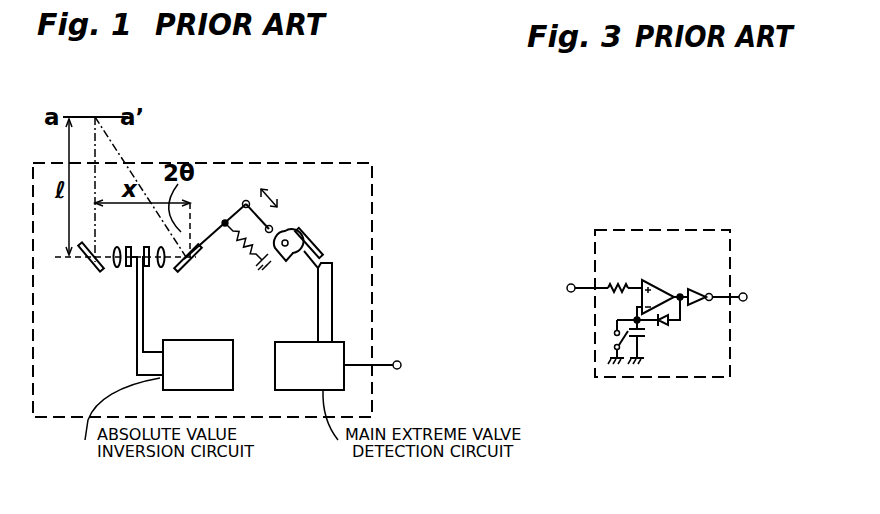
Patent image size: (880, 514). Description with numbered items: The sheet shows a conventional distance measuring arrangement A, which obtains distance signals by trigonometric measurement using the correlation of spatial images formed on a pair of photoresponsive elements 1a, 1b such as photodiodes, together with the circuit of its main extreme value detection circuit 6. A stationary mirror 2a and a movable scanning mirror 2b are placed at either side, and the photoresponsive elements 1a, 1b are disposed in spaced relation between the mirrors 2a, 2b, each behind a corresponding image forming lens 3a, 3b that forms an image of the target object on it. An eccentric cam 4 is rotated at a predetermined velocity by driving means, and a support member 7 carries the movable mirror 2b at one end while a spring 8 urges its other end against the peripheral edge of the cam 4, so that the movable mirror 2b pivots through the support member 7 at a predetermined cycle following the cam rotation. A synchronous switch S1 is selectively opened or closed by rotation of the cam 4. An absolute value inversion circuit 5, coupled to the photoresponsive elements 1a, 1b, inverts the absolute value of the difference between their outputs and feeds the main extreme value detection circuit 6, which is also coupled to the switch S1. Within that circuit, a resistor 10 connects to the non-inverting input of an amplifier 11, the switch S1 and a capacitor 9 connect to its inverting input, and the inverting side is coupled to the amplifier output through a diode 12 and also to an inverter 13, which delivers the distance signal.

In FIG. 1, the distance measuring arrangement A is at (234, 162).
In FIG. 1, the photoresponsive element 1a is at (116, 247).
In FIG. 1, the photoresponsive element 1b is at (159, 247).
In FIG. 1, the stationary mirror 2a is at (87, 263).
In FIG. 1, the movable mirror 2b is at (193, 266).
In FIG. 1, the image forming lens 3a is at (121, 270).
In FIG. 1, the image forming lens 3b is at (148, 268).
In FIG. 1, the eccentric cam 4 is at (283, 231).
In FIG. 1, the absolute value inversion circuit 5 is at (211, 379).
In FIG. 1, the main extreme value detection circuit 6 is at (323, 381).
In FIG. 3, the main extreme value detection circuit 6 is at (687, 228).
In FIG. 1, the support member 7 is at (233, 213).
In FIG. 1, the spring 8 is at (248, 250).
In FIG. 1, the synchronous switch S1 is at (318, 236).
In FIG. 3, the synchronous switch S1 is at (614, 334).
In FIG. 3, the capacitor 9 is at (644, 334).
In FIG. 3, the resistor 10 is at (619, 286).
In FIG. 3, the amplifier 11 is at (661, 289).
In FIG. 3, the diode 12 is at (667, 326).
In FIG. 3, the inverter 13 is at (700, 292).